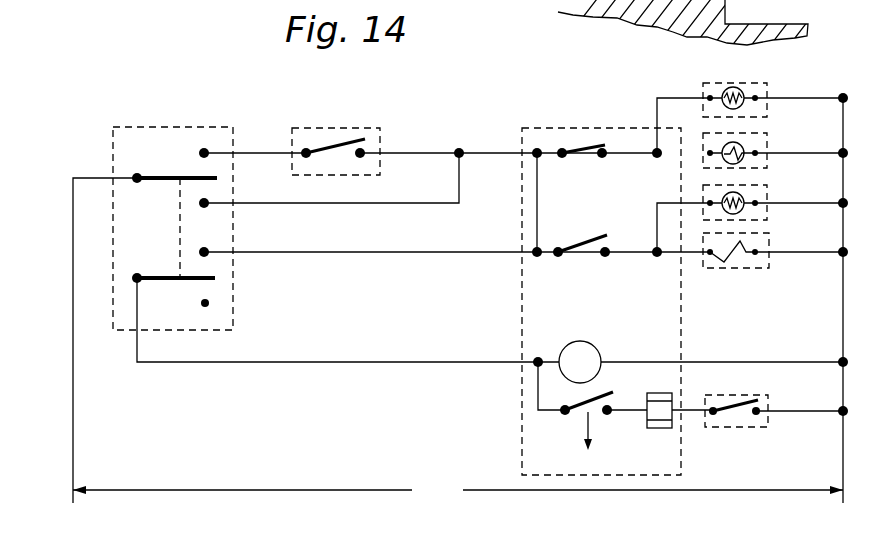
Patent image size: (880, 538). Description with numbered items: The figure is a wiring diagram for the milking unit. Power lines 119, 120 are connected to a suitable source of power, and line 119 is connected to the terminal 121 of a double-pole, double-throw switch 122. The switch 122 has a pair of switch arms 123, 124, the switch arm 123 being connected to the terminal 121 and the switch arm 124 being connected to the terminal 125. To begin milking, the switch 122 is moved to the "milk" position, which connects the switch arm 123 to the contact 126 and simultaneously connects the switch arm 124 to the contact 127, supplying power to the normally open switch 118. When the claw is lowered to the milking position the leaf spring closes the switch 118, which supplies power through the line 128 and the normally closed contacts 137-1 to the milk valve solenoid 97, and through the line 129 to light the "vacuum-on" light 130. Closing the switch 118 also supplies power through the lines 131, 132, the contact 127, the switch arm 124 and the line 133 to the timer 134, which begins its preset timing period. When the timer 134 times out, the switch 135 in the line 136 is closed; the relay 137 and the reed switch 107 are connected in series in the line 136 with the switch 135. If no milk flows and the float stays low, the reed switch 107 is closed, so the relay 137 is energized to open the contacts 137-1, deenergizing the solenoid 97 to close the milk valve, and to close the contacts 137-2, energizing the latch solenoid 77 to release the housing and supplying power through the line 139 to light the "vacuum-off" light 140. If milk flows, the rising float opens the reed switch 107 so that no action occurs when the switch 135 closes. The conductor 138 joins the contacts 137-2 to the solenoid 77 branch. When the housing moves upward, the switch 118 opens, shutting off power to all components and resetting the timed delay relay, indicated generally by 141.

The power line 119 is at (97, 178).
The power line 120 is at (350, 488).
The terminal 121 is at (137, 173).
The double-pole, double-throw switch 122 is at (110, 292).
The switch arm 123 is at (216, 173).
The switch arm 124 is at (188, 282).
The terminal 125 is at (138, 273).
The contact 126 is at (205, 148).
The contact 127 is at (207, 251).
The line 128 is at (493, 152).
The line 129 is at (678, 97).
The "vacuum-on" light 130 is at (768, 83).
The milk valve solenoid 97 is at (768, 138).
The line 131 is at (539, 180).
The line 132 is at (413, 253).
The line 133 is at (445, 361).
The timer 134 is at (575, 340).
The switch 135 is at (592, 394).
The line 136 is at (553, 413).
The relay 137 is at (663, 393).
The normally closed contacts 137-1 is at (614, 100).
The normally open contacts 137-2 is at (582, 242).
The conductor 138 is at (690, 254).
The line 139 is at (692, 202).
The "vacuum-off" light 140 is at (768, 189).
The timed delay relay 141 is at (520, 442).
The latch solenoid 77 is at (768, 270).
The reed switch 107 is at (768, 395).
The normally open switch 118 is at (368, 125).